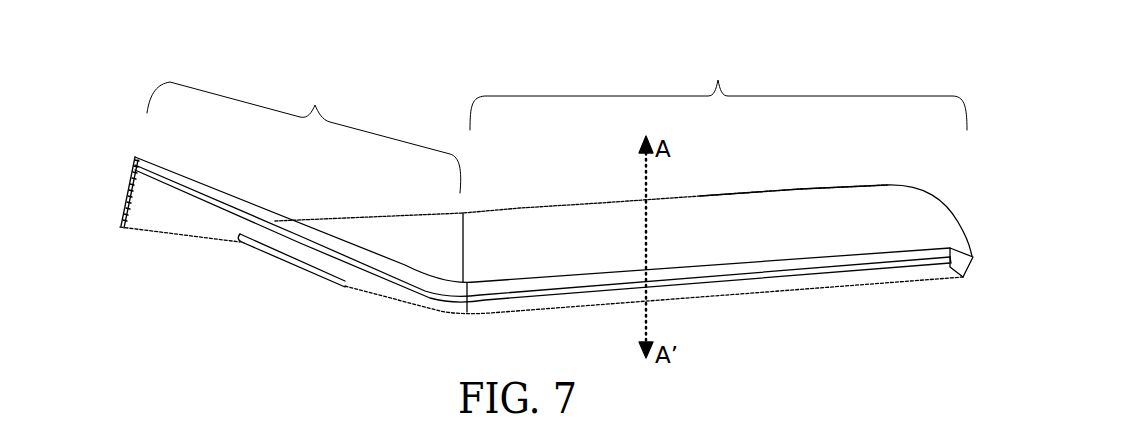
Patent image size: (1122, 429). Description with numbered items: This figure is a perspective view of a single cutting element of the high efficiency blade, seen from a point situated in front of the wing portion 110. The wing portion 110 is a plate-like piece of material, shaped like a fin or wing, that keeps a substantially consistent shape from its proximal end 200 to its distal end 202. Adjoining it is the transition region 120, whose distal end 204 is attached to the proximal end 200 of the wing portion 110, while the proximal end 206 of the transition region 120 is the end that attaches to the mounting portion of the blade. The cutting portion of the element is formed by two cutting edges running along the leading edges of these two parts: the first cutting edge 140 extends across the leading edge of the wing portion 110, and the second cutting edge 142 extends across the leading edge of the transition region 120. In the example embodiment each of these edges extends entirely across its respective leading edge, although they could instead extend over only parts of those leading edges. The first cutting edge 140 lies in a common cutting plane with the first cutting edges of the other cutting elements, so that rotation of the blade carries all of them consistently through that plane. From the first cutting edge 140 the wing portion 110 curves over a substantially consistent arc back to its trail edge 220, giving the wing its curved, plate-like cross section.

The wing portion 110 is at (718, 91).
The transition region 120 is at (304, 130).
The first cutting edge 140 is at (705, 273).
The second cutting edge 142 is at (370, 266).
The proximal end of the wing portion 200 is at (470, 260).
The distal end of the wing portion 202 is at (973, 257).
The distal end of the transition region 204 is at (457, 230).
The proximal end of the transition region 206 is at (135, 197).
The trail edge of the wing portion 220 is at (700, 195).